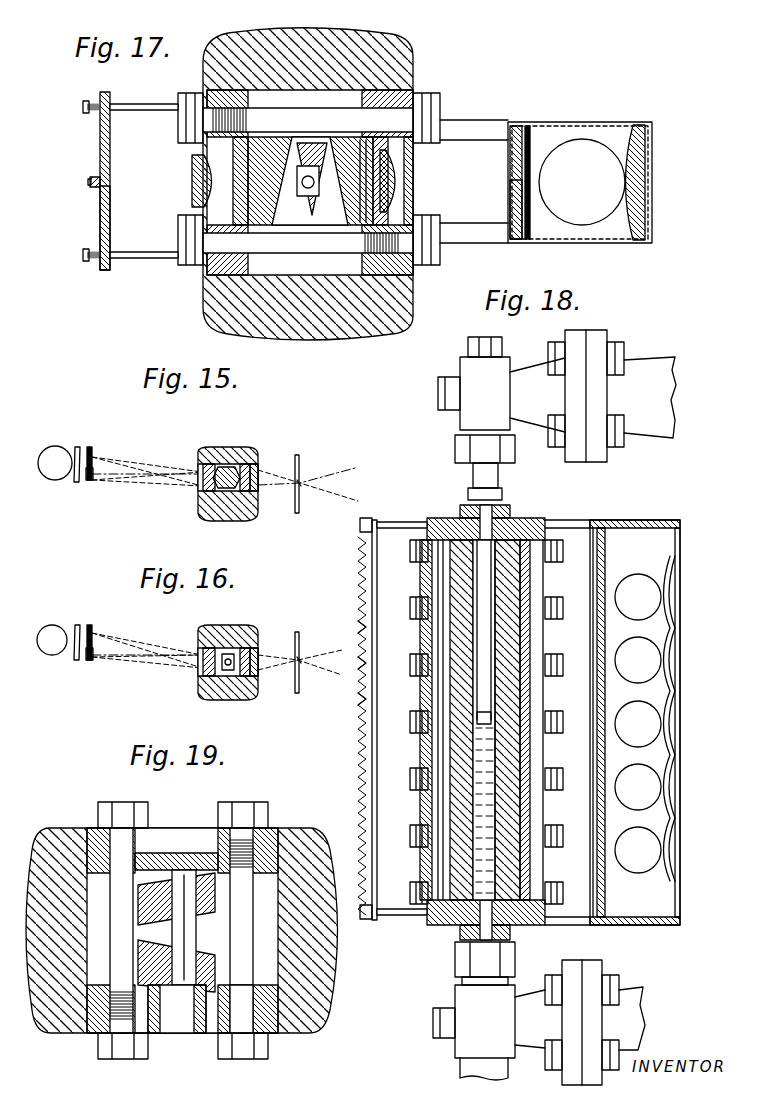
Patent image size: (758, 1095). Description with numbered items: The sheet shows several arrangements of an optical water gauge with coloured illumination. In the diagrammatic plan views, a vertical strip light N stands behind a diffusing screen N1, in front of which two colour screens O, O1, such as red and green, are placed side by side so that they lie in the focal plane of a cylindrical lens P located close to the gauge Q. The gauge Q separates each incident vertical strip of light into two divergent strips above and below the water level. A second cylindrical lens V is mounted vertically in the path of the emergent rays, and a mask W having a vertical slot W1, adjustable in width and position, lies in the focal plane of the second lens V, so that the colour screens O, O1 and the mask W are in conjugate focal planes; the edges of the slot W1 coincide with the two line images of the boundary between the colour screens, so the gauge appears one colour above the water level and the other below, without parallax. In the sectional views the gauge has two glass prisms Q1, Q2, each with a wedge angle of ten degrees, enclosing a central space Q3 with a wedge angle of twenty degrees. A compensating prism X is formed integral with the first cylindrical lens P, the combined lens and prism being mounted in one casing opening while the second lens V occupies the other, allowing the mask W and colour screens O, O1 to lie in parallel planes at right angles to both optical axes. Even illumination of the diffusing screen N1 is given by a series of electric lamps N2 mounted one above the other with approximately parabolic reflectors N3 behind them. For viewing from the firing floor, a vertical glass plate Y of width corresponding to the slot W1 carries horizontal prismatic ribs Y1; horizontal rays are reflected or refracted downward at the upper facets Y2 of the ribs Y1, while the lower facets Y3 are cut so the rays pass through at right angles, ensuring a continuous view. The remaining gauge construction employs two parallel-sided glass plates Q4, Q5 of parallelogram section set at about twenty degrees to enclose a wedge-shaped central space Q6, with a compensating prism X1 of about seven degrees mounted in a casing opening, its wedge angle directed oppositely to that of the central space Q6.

In FIG. 15, the vertical strip light N is at (50, 457).
In FIG. 16, the vertical strip light N is at (48, 636).
In FIG. 17, the diffusing screen N1 is at (527, 126).
In FIG. 15, the diffusing screen N1 is at (77, 447).
In FIG. 16, the diffusing screen N1 is at (77, 625).
In FIG. 18, the diffusing screen N1 is at (604, 872).
In FIG. 17, the electric lamps N2 is at (580, 160).
In FIG. 18, the electric lamps N2 is at (625, 600).
In FIG. 17, the parabolic reflectors N3 is at (640, 140).
In FIG. 18, the parabolic reflectors N3 is at (670, 728).
In FIG. 17, the colour screen O is at (513, 130).
In FIG. 15, the colour screen O is at (91, 447).
In FIG. 16, the colour screen O is at (91, 625).
In FIG. 17, the colour screen O1 is at (512, 205).
In FIG. 15, the colour screen O1 is at (89, 482).
In FIG. 16, the colour screen O1 is at (89, 662).
In FIG. 18, the colour screen O1 is at (598, 845).
In FIG. 17, the cylindrical lens P is at (398, 172).
In FIG. 15, the cylindrical lens P is at (205, 470).
In FIG. 16, the cylindrical lens P is at (205, 650).
In FIG. 15, the gauge Q is at (228, 448).
In FIG. 16, the gauge Q is at (228, 627).
In FIG. 17, the glass prism Q1 is at (358, 210).
In FIG. 18, the glass prism Q1 is at (500, 583).
In FIG. 17, the glass prism Q2 is at (270, 192).
In FIG. 18, the glass prism Q2 is at (470, 768).
In FIG. 17, the central space Q3 is at (297, 173).
In FIG. 18, the central space Q3 is at (487, 716).
In FIG. 19, the parallel-sided glass plate Q4 is at (254, 853).
In FIG. 19, the parallel-sided glass plate Q5 is at (186, 960).
In FIG. 19, the wedge-shaped central space Q6 is at (176, 856).
In FIG. 17, the second cylindrical lens V is at (192, 195).
In FIG. 15, the second cylindrical lens V is at (256, 475).
In FIG. 16, the second cylindrical lens V is at (256, 655).
In FIG. 18, the second cylindrical lens V is at (420, 808).
In FIG. 17, the mask W is at (100, 138).
In FIG. 15, the mask W is at (298, 455).
In FIG. 16, the mask W is at (298, 632).
In FIG. 18, the mask W is at (375, 922).
In FIG. 17, the vertical slot W1 is at (100, 187).
In FIG. 15, the vertical slot W1 is at (303, 483).
In FIG. 16, the vertical slot W1 is at (298, 658).
In FIG. 17, the compensating prism X is at (390, 180).
In FIG. 18, the compensating prism X is at (530, 808).
In FIG. 19, the compensating prism X1 is at (190, 857).
In FIG. 17, the vertical glass plate Y is at (112, 182).
In FIG. 18, the vertical glass plate Y is at (364, 838).
In FIG. 17, the prismatic ribs Y1 is at (88, 182).
In FIG. 18, the prismatic ribs Y1 is at (366, 627).
In FIG. 18, the upper facet Y2 is at (366, 663).
In FIG. 18, the lower facet Y3 is at (366, 699).